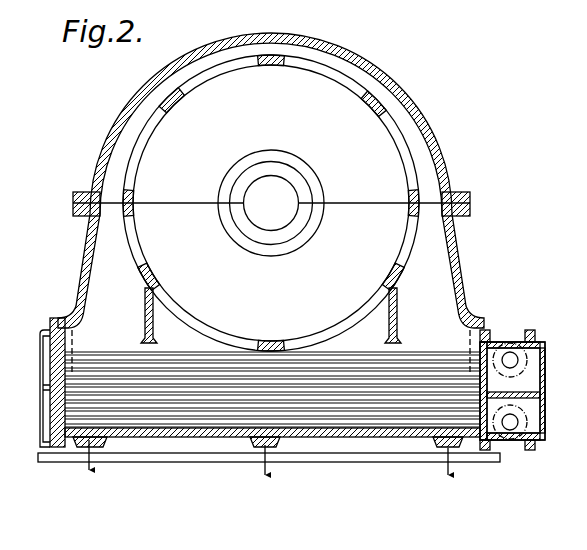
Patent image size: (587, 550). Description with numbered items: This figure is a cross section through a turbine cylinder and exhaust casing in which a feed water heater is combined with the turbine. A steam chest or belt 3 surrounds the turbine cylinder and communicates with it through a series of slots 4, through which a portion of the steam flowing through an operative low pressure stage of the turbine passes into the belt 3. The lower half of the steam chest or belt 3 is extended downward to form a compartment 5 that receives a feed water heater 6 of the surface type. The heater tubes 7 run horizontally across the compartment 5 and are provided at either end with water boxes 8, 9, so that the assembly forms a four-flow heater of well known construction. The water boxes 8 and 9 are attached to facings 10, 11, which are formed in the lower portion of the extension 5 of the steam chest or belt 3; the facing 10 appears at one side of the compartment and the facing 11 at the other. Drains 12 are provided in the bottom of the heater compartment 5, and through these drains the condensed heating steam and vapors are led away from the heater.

The steam chest or belt 3 is at (413, 140).
The slots 4 is at (157, 118).
The compartment 5 is at (210, 437).
The feed water heater 6 is at (537, 353).
The heater tubes 7 is at (370, 440).
The water box 8 is at (48, 402).
The water box 9 is at (520, 380).
The facing 10 is at (73, 320).
The facing 11 is at (481, 337).
The drains 12 is at (85, 438).